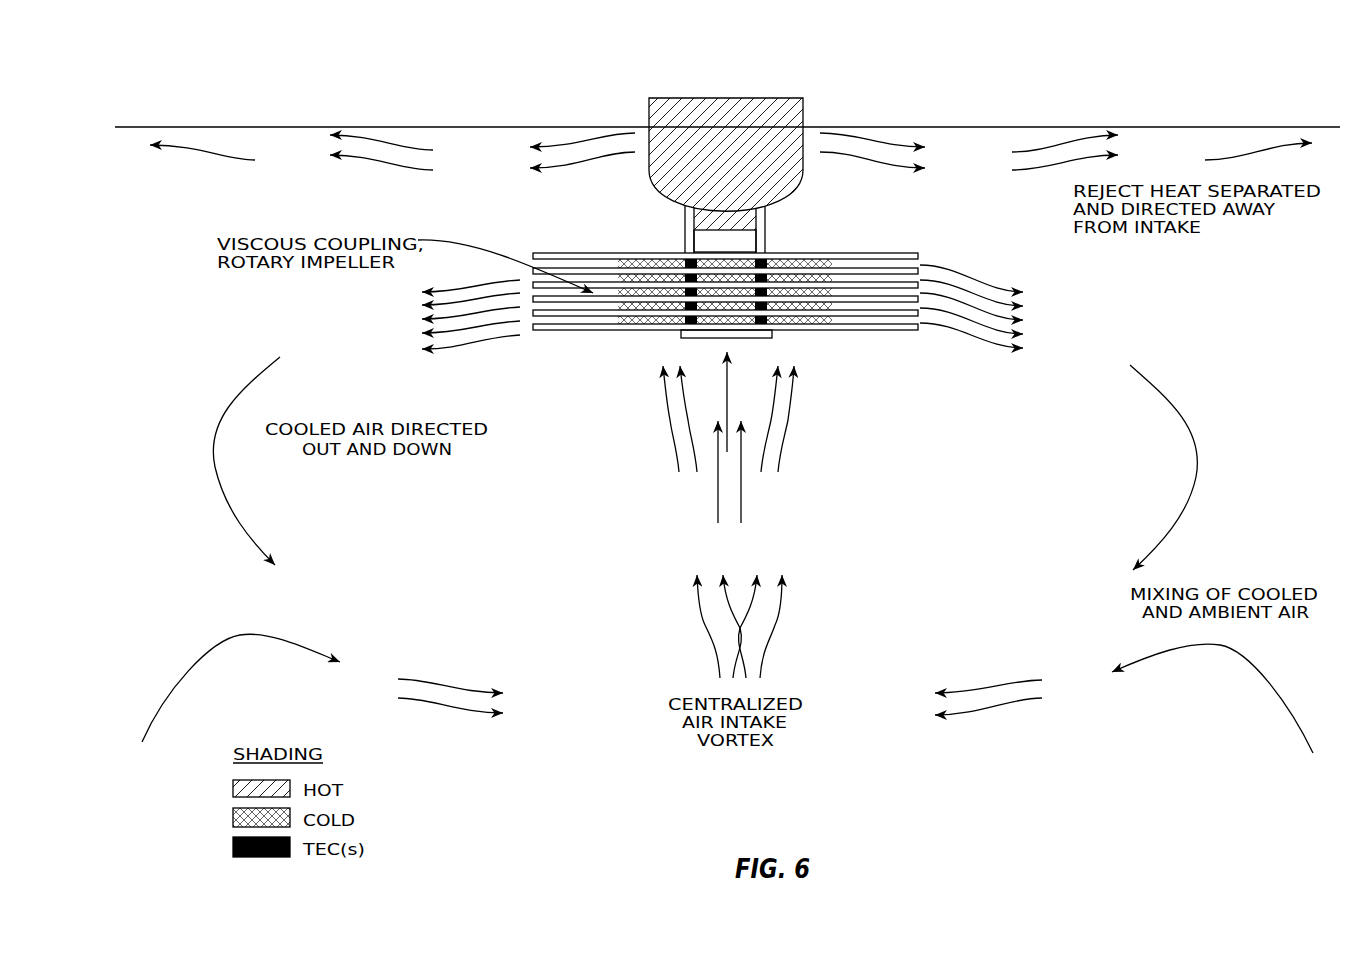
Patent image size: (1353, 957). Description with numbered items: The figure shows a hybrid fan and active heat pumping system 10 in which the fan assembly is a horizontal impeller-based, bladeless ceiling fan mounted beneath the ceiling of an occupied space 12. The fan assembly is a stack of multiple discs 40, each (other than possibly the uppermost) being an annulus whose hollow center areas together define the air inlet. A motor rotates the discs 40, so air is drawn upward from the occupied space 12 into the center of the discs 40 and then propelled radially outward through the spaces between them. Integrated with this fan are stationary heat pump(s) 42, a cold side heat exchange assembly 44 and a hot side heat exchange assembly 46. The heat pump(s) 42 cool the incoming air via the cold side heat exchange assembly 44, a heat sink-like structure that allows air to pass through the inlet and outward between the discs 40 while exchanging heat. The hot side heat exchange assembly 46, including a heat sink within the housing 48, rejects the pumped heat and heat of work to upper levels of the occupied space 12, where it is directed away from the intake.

The hybrid fan and active heat pumping system 10 is at (850, 203).
The occupied space 12 is at (1175, 145).
The discs 40 is at (615, 285).
The heat pump(s) 42 is at (683, 260).
The cold side heat exchange assembly 44 is at (655, 325).
The hot side heat exchange assembly 46 is at (720, 320).
The housing 48 is at (810, 167).